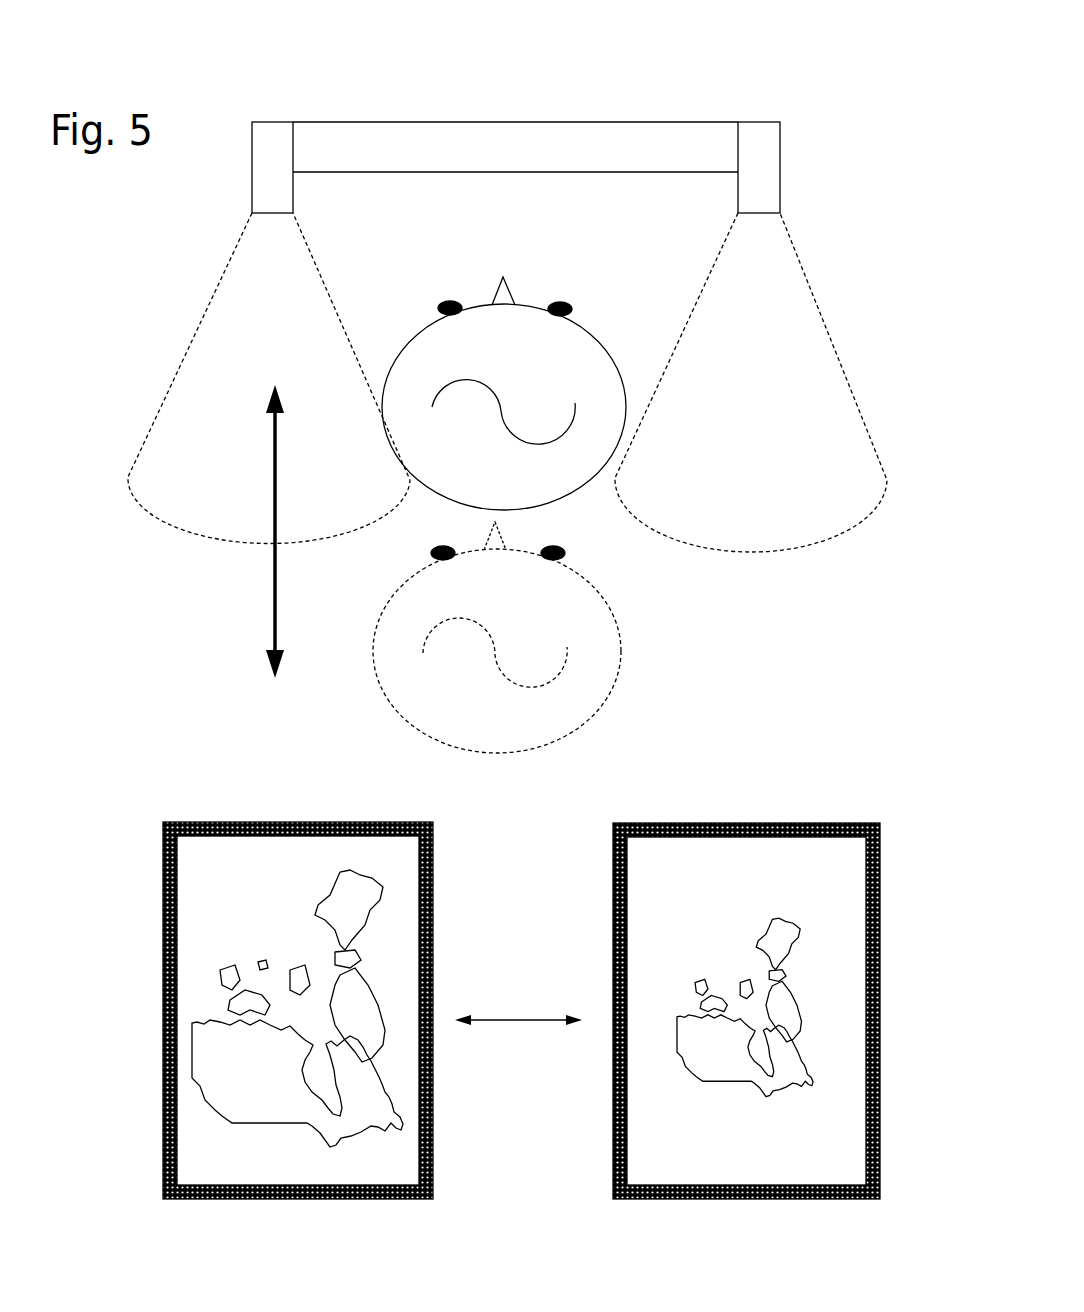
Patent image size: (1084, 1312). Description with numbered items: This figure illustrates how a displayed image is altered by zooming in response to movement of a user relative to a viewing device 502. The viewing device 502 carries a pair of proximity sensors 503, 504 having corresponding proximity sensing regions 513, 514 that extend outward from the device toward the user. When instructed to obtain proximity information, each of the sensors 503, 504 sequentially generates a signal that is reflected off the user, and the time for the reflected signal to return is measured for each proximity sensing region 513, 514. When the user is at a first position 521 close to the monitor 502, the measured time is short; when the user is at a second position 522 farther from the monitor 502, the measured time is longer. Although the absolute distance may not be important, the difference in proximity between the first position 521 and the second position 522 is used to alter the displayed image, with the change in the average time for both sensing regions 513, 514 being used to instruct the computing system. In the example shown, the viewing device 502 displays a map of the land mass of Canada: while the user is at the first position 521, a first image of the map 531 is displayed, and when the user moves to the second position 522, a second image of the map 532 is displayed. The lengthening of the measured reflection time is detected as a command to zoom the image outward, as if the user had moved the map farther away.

The viewing device 502 is at (400, 156).
The proximity sensor 503 is at (267, 147).
The proximity sensor 504 is at (755, 167).
The proximity sensing region 513 is at (260, 353).
The proximity sensing region 514 is at (782, 372).
The first position 521 is at (548, 295).
The second position 522 is at (613, 662).
The first image of the map 531 is at (263, 820).
The second image of the map 532 is at (757, 820).